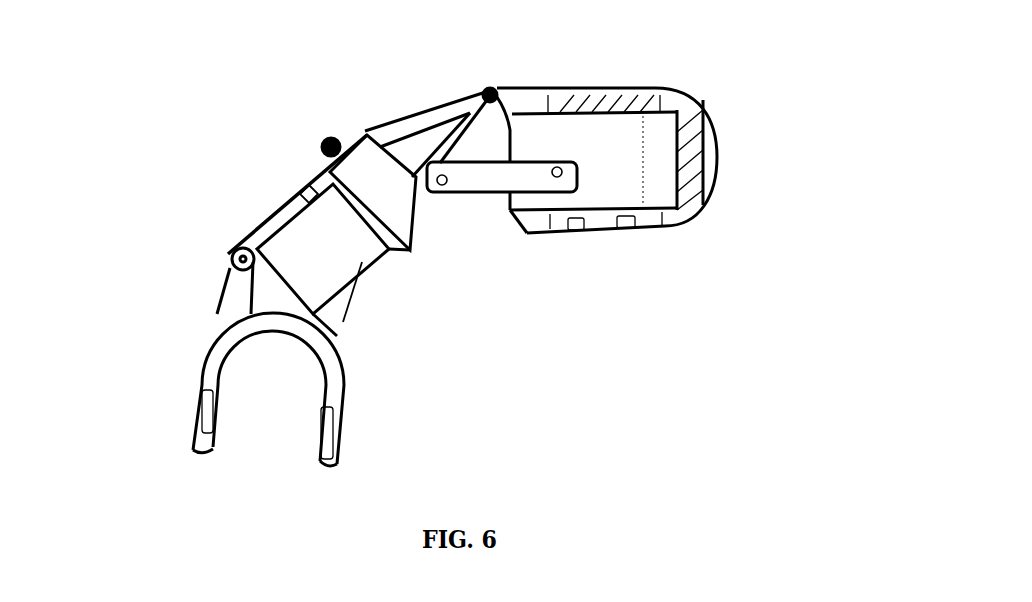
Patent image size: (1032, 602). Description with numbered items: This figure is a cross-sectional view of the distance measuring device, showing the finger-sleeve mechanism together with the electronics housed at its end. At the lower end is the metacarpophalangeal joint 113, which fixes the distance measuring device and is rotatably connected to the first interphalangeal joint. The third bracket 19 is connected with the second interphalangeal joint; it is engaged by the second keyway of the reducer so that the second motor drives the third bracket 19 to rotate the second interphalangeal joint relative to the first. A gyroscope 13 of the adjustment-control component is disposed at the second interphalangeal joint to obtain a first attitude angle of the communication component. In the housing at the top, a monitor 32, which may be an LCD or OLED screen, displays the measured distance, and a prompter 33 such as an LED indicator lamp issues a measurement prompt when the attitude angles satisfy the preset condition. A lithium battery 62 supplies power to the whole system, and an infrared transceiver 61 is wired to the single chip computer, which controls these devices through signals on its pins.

The gyroscope 13 is at (431, 98).
The third bracket 19 is at (280, 189).
The monitor 32 is at (593, 114).
The prompter 33 is at (767, 157).
The infrared transceiver 61 is at (696, 265).
The lithium battery 62 is at (752, 128).
The metacarpophalangeal joint 113 is at (194, 364).